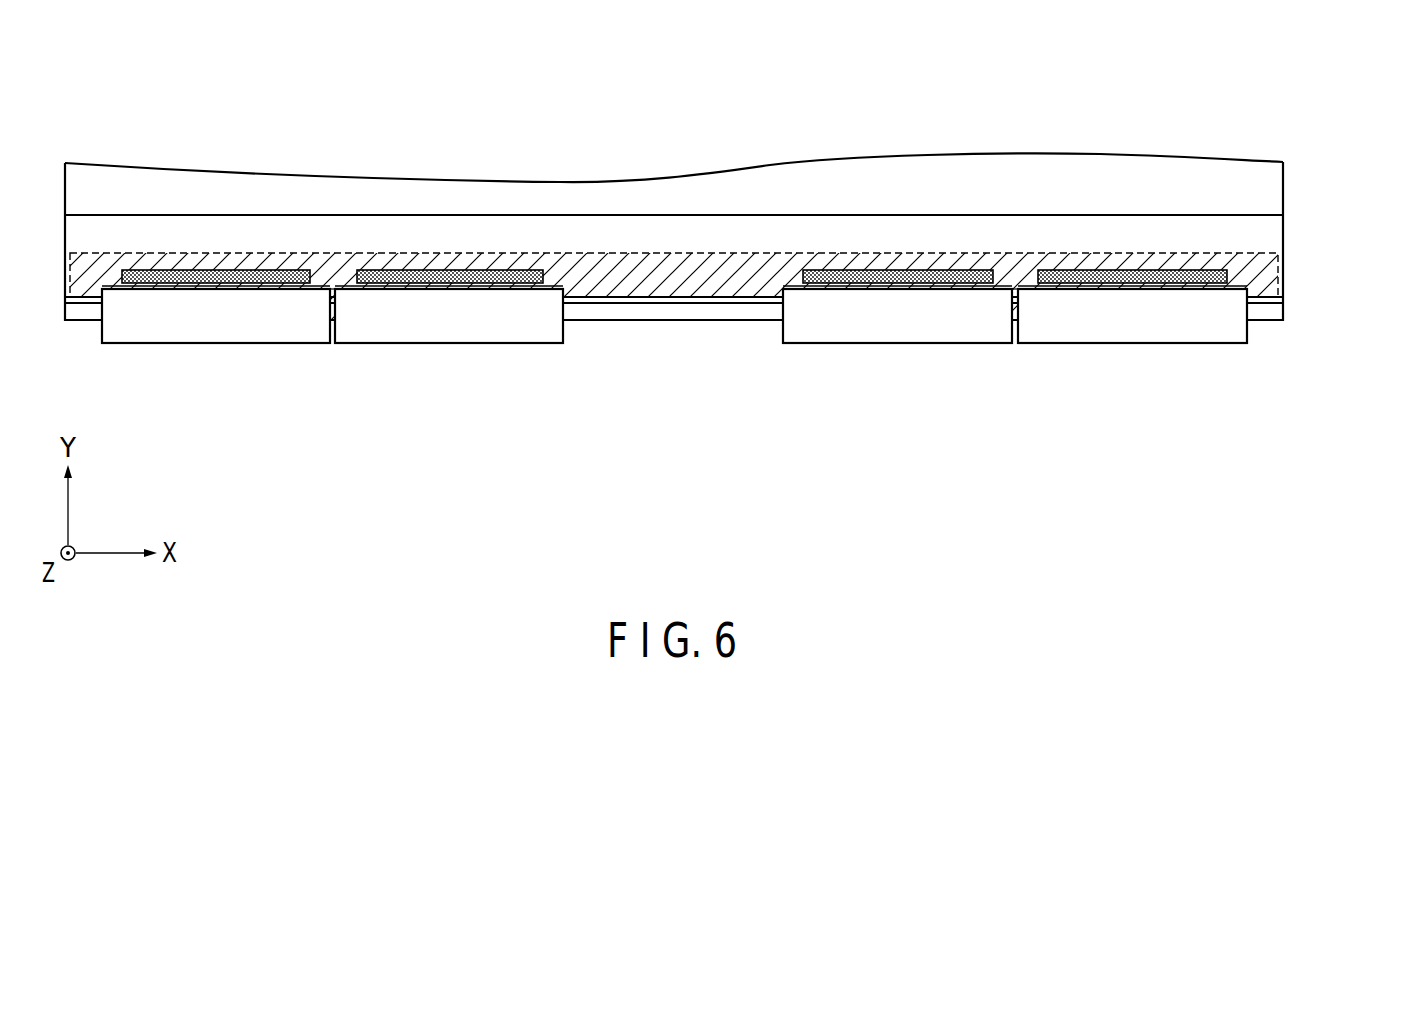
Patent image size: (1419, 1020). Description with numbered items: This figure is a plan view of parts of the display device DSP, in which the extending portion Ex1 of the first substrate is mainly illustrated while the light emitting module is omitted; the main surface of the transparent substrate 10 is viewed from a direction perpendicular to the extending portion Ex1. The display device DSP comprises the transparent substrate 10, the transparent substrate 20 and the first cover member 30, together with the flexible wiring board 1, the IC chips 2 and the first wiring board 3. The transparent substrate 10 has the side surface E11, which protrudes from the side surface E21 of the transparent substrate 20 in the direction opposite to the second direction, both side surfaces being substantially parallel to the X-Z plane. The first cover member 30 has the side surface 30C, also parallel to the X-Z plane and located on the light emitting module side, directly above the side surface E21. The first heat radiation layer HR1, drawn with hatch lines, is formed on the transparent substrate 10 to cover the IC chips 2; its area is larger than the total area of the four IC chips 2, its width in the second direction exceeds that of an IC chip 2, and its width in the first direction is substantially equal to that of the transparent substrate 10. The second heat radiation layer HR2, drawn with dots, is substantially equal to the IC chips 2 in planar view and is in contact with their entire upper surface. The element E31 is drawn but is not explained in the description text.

The display device DSP is at (731, 254).
The first cover member 30 is at (1273, 188).
The transparent substrate 20 is at (725, 176).
The transparent substrate 10 is at (1273, 227).
The side surface 30C is at (752, 228).
The side surface E21 is at (674, 301).
The extending portion Ex1 is at (1306, 254).
The side surface E11 is at (620, 313).
The end portion of cover member E31 is at (686, 333).
The first wiring board 3 is at (1276, 312).
The IC chip 2 is at (273, 290).
The flexible wiring board 1 is at (313, 330).
The second heat radiation layer HR2 is at (188, 290).
The first heat radiation layer HR1 is at (1270, 308).